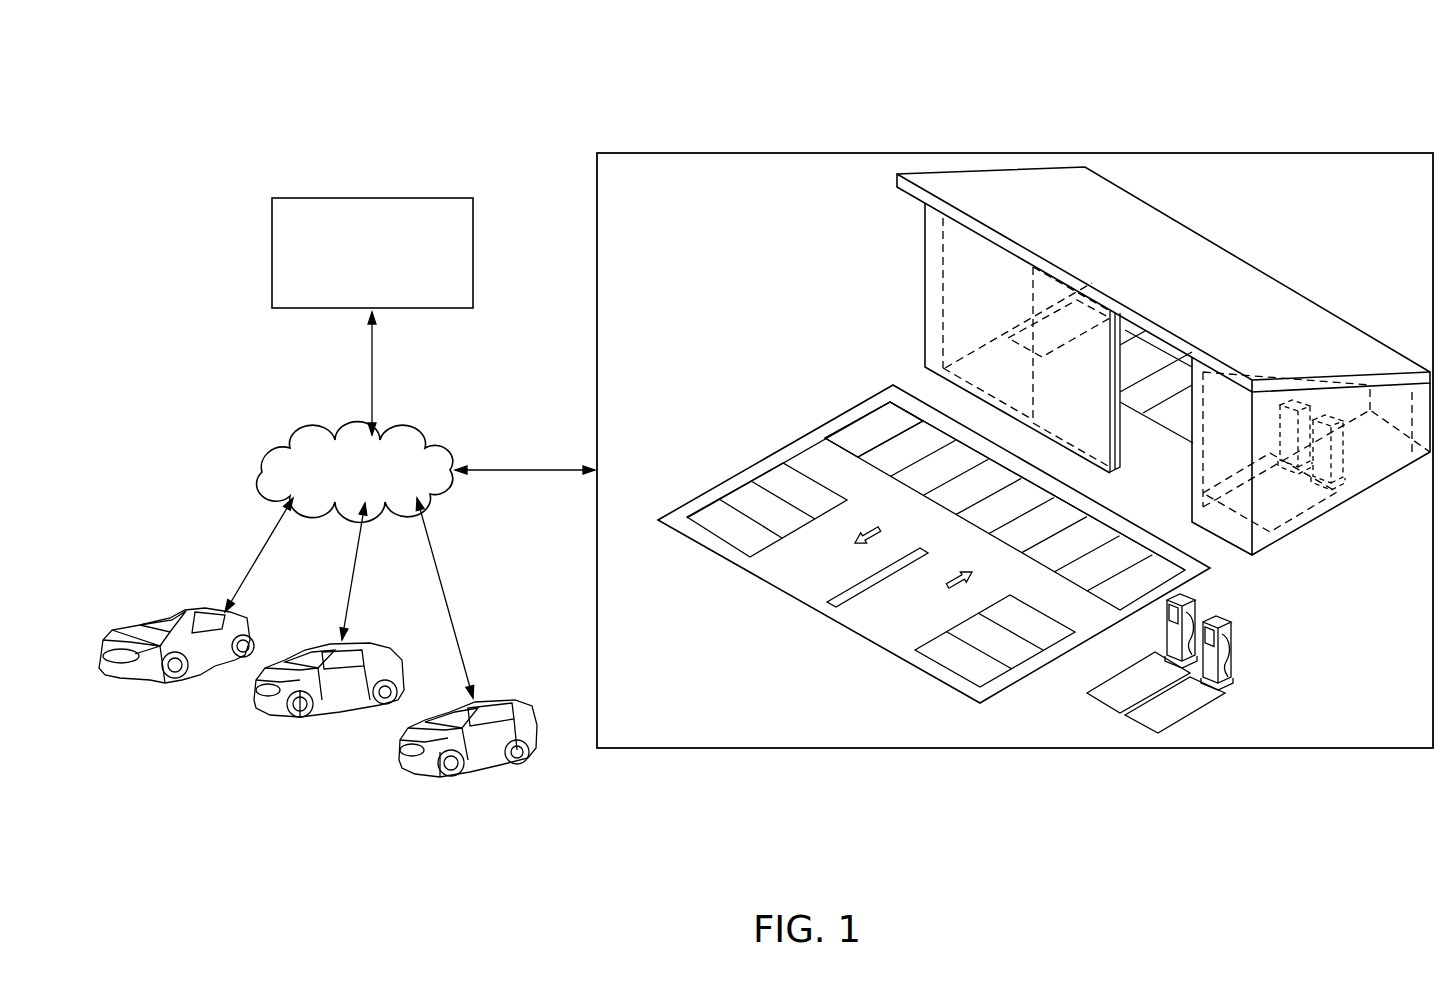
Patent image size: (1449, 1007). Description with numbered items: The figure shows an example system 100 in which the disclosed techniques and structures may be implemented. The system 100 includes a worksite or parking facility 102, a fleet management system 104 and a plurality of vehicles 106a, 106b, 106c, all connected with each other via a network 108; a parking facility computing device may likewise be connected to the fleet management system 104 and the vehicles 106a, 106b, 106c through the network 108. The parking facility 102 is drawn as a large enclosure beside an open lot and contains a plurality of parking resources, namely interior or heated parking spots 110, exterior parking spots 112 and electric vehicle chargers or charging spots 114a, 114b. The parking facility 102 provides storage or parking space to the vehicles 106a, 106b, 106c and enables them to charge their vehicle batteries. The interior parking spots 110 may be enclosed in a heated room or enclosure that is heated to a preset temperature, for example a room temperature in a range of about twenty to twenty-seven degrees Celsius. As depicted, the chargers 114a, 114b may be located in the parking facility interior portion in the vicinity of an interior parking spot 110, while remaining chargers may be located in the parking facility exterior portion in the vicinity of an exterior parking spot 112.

The system 100 is at (228, 86).
The parking facility 102 is at (818, 152).
The fleet management system 104 is at (371, 197).
The vehicle 106a is at (175, 608).
The vehicle 106b is at (316, 648).
The vehicle 106c is at (517, 699).
The network 108 is at (262, 464).
The interior parking spots 110 is at (1057, 327).
The exterior parking spots 112 is at (855, 433).
The charger 114a is at (1233, 633).
The charger 114b is at (1345, 468).